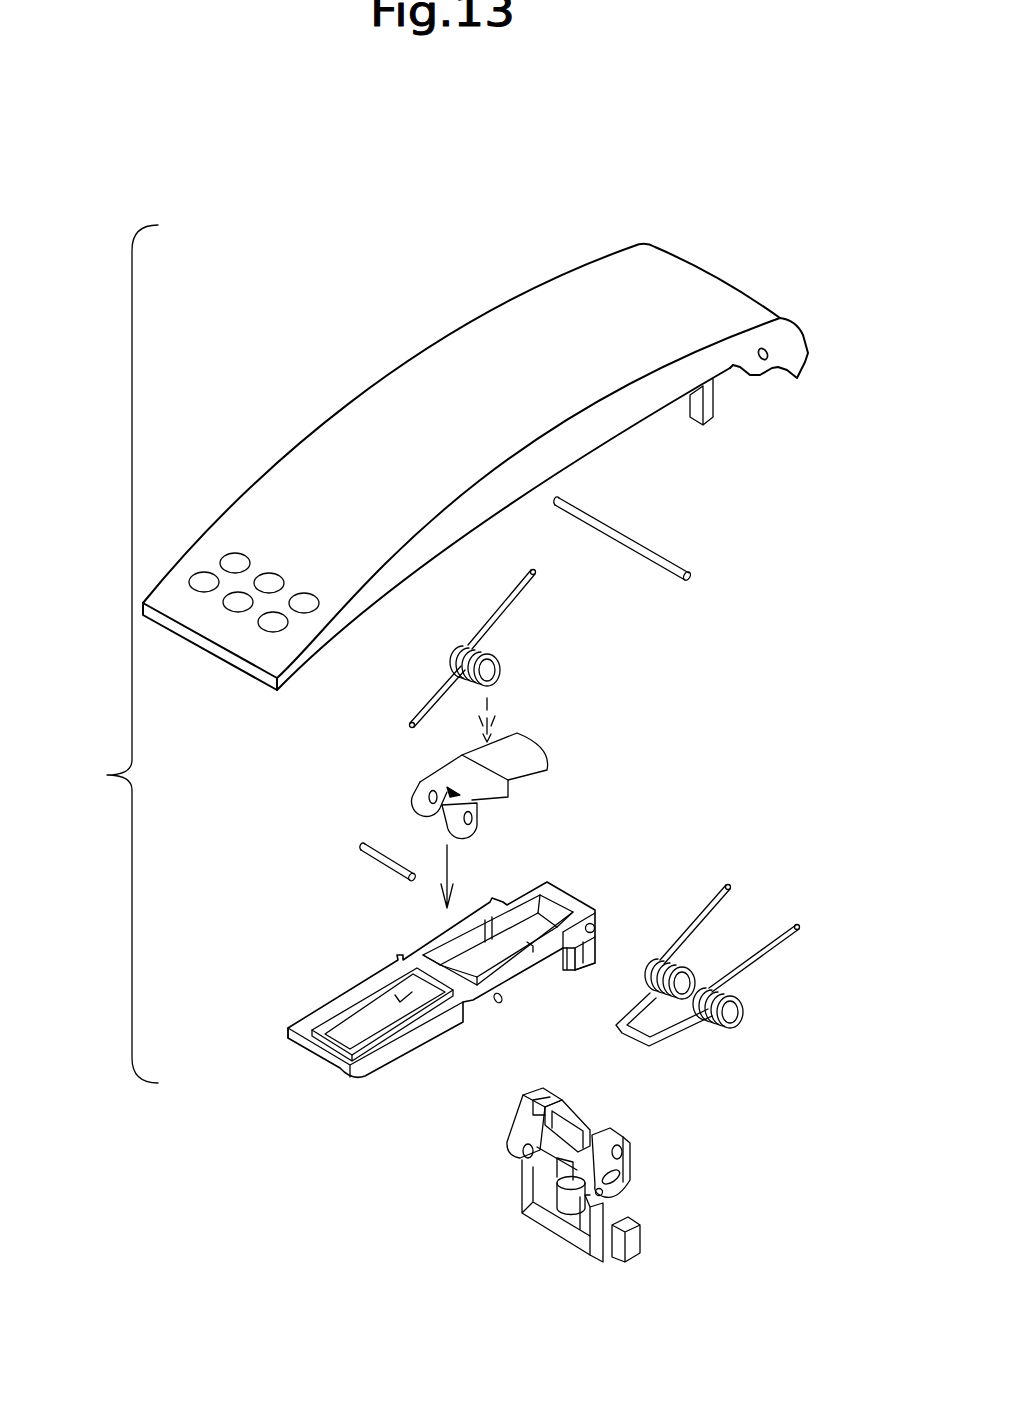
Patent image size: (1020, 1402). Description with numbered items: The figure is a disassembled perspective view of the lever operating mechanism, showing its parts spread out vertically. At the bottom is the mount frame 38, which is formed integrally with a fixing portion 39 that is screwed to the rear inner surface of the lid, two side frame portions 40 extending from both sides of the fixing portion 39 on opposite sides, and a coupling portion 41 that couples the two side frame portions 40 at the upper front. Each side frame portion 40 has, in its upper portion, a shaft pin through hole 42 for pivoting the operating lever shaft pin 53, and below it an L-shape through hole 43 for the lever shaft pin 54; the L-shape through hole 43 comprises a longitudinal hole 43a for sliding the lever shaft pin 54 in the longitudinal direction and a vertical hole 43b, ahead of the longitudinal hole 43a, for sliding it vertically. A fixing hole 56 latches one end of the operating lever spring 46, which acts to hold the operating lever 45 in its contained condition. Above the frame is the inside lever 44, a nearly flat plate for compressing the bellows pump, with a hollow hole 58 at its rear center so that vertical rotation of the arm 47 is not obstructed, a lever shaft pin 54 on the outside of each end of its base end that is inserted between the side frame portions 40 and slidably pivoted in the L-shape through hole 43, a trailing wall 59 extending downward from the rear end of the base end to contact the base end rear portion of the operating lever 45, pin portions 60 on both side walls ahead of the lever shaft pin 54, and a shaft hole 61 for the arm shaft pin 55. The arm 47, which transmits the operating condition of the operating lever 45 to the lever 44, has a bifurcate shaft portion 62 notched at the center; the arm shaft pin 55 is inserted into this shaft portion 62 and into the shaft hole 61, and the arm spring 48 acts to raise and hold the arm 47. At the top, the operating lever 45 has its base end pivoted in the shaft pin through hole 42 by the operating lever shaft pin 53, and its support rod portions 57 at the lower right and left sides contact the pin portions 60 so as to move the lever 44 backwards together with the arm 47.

The operating lever 45 is at (322, 460).
The support rod portion 57 is at (700, 400).
The operating lever shaft pin 53 is at (775, 358).
The arm spring 48 is at (452, 650).
The arm 47 is at (518, 750).
The shaft portion 62 is at (408, 783).
The arm shaft pin 55 is at (367, 872).
The hollow hole 58 is at (535, 928).
The lever shaft pin 54 is at (594, 926).
The inside lever 44 is at (323, 1013).
The operating lever spring 46 is at (737, 995).
The trailing wall 59 is at (582, 966).
The pin portion 60 is at (563, 970).
The shaft hole 61 is at (495, 1003).
The fixing hole 56 is at (565, 1140).
The coupling portion 41 is at (542, 1142).
The shaft pin through hole 42 is at (619, 1148).
The L-shape through hole 43 is at (637, 1174).
The longitudinal hole 43a is at (620, 1180).
The vertical hole 43b is at (522, 1152).
The side frame portion 40 is at (545, 1178).
The fixing portion 39 is at (558, 1218).
The mount frame 38 is at (641, 1281).